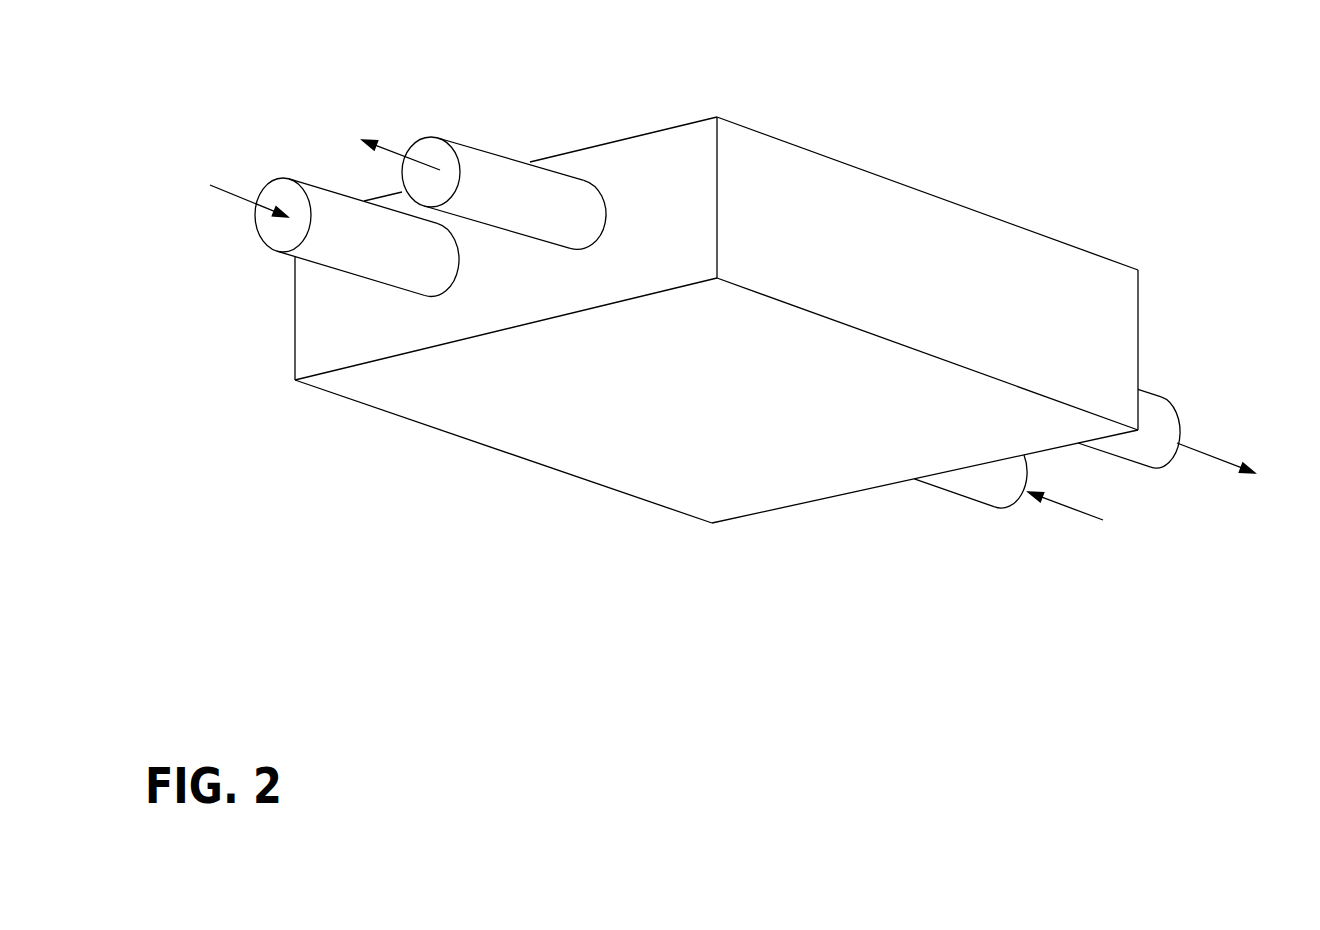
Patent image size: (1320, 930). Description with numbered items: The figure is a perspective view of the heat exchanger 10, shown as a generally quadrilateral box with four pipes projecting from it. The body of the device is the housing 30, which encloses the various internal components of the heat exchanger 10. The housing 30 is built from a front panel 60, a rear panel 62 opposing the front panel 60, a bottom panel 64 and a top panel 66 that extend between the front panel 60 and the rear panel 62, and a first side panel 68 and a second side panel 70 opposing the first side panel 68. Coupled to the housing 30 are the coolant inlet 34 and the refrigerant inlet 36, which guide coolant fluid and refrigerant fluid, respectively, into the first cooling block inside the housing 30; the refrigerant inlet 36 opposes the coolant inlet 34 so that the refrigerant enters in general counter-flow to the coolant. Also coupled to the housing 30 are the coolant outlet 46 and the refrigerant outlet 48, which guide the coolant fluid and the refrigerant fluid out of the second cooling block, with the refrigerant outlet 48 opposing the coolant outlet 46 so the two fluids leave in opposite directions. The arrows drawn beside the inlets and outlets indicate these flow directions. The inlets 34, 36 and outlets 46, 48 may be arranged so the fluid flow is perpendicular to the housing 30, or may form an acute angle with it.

The heat exchanger 10 is at (974, 110).
The housing 30 is at (1077, 247).
The coolant inlet 34 is at (323, 205).
The refrigerant inlet 36 is at (968, 483).
The coolant outlet 46 is at (487, 170).
The refrigerant outlet 48 is at (1157, 405).
The front panel 60 is at (307, 328).
The rear panel 62 is at (822, 500).
The bottom panel 64 is at (580, 417).
The top panel 66 is at (827, 155).
The first side panel 68 is at (433, 430).
The second side panel 70 is at (973, 230).